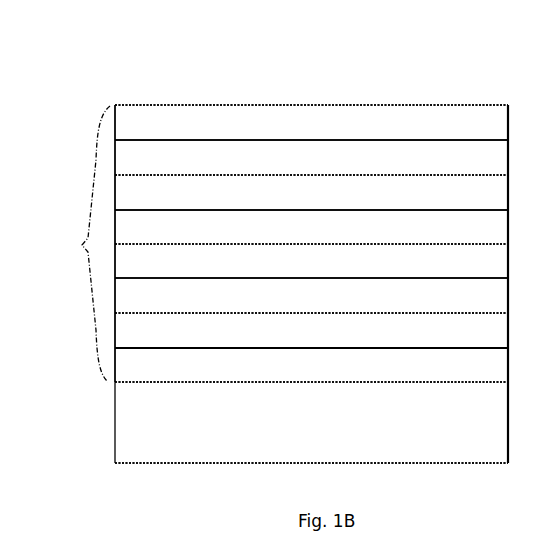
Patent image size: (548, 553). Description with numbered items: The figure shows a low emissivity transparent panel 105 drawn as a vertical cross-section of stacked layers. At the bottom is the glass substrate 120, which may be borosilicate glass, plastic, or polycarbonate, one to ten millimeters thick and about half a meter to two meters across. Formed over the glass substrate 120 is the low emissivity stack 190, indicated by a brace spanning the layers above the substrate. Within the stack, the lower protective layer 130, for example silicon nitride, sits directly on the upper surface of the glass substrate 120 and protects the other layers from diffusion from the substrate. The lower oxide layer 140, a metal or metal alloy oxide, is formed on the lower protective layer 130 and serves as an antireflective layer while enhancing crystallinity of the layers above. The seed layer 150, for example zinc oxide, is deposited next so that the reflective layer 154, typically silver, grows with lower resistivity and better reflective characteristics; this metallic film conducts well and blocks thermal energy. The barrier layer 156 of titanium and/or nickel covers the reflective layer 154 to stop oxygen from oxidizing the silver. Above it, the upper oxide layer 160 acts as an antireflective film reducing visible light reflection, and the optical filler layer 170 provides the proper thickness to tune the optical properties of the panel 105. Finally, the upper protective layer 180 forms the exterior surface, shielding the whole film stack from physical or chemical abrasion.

The low emissivity transparent panel 105 is at (104, 94).
The glass substrate 120 is at (296, 433).
The lower protective layer 130 is at (296, 374).
The lower oxide layer 140 is at (296, 340).
The seed layer 150 is at (296, 305).
The reflective layer 154 is at (296, 271).
The barrier layer 156 is at (296, 237).
The upper oxide layer 160 is at (296, 203).
The optical filler layer 170 is at (296, 167).
The upper protective layer 180 is at (296, 133).
The low emissivity stack 190 is at (77, 243).